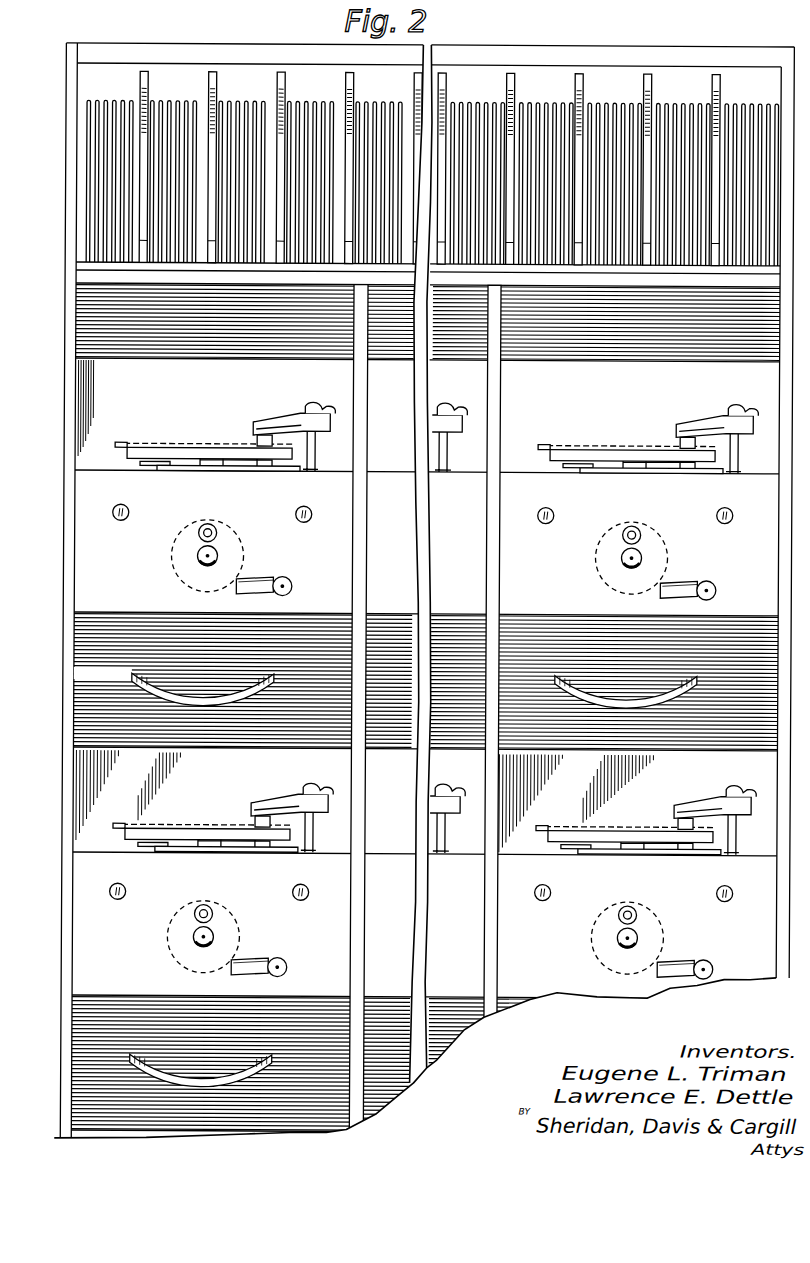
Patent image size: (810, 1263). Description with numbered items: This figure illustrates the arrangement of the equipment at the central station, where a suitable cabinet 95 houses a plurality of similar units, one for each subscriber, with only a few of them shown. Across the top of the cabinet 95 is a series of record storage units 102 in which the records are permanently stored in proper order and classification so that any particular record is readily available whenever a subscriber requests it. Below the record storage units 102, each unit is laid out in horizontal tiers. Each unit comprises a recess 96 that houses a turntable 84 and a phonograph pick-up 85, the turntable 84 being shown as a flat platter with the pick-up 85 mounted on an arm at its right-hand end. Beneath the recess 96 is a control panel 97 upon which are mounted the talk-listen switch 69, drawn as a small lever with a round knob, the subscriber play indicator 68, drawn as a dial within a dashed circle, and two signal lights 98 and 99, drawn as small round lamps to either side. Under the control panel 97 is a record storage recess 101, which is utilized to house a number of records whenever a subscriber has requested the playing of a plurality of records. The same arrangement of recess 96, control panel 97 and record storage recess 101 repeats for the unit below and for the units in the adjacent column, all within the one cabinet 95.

The cabinet 95 is at (92, 49).
The record storage units 102 is at (95, 79).
The control panel 97 is at (77, 498).
The recess 96 is at (117, 395).
The turntable 84 is at (138, 453).
The phonograph pick-up 85 is at (274, 423).
The signal light 98 is at (128, 507).
The signal light 99 is at (304, 505).
The subscriber play indicator 68 is at (199, 533).
The talk-listen switch 69 is at (257, 581).
The record storage recess 101 is at (77, 640).